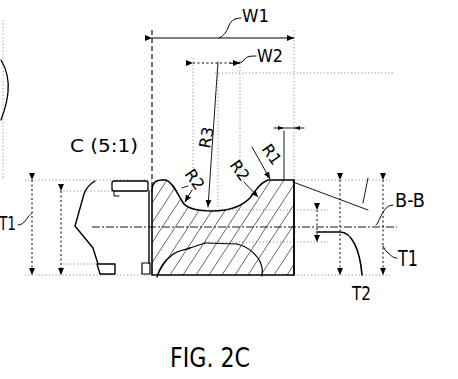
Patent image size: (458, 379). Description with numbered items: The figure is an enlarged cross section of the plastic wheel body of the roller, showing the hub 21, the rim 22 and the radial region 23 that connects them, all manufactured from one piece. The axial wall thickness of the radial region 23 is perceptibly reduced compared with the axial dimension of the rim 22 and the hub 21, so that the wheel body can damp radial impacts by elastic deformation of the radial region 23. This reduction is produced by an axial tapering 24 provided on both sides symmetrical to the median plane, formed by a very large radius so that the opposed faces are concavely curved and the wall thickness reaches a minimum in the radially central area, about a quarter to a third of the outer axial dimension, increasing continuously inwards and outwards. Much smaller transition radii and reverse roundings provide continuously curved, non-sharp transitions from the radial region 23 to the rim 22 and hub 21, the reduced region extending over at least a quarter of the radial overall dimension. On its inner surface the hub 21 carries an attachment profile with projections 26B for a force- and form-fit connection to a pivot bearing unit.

The hub 21 is at (164, 254).
The rim 22 is at (6, 65).
The radial region 23 is at (208, 243).
The axial tapering 24 is at (237, 243).
The projections 26B is at (130, 182).